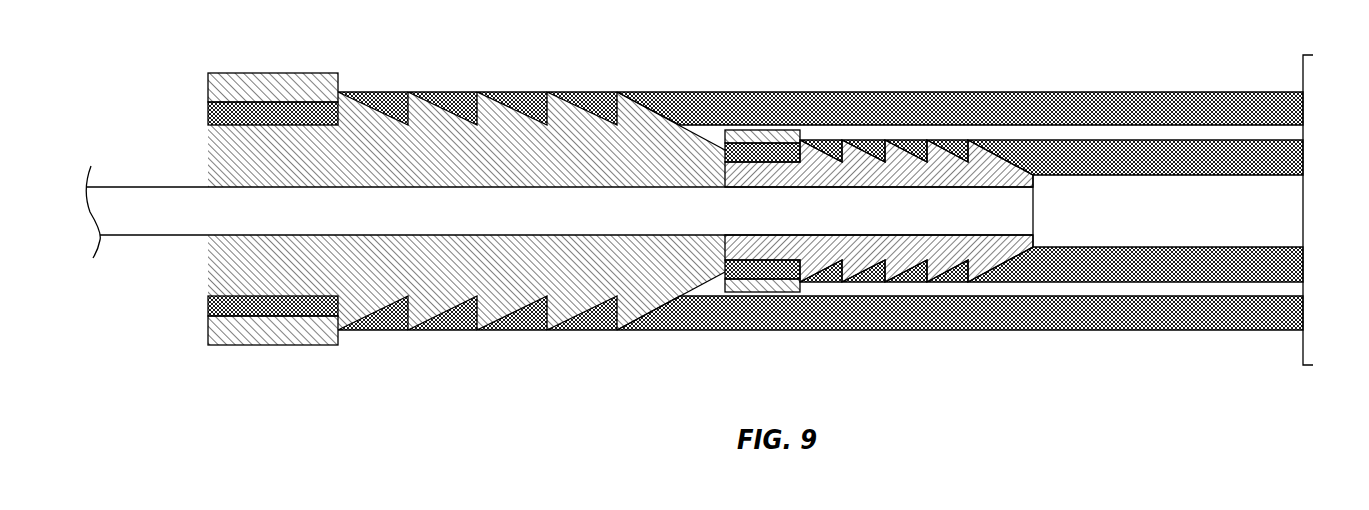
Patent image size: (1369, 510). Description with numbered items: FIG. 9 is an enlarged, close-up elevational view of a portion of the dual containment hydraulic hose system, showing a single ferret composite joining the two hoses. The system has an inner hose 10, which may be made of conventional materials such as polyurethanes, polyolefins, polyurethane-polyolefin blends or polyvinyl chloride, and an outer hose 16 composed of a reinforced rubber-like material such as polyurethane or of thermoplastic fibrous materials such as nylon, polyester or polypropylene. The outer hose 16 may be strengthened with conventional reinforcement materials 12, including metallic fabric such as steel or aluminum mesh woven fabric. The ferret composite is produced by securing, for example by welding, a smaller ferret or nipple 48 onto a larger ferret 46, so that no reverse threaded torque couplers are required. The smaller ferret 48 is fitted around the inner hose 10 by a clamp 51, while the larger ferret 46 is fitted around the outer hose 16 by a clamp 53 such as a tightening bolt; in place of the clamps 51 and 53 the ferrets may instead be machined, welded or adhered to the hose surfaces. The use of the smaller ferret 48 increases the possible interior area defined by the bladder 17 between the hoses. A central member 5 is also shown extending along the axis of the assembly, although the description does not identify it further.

The guidewire 5 is at (195, 229).
The inner hose 10 is at (1015, 152).
The reinforcement materials 12 is at (1097, 223).
The outer hose 16 is at (677, 92).
The bladder 17 is at (1182, 132).
The larger ferret 46 is at (493, 315).
The ferret (nipple) 48 is at (843, 277).
The clamp 51 is at (762, 137).
The clamp 53 is at (252, 87).